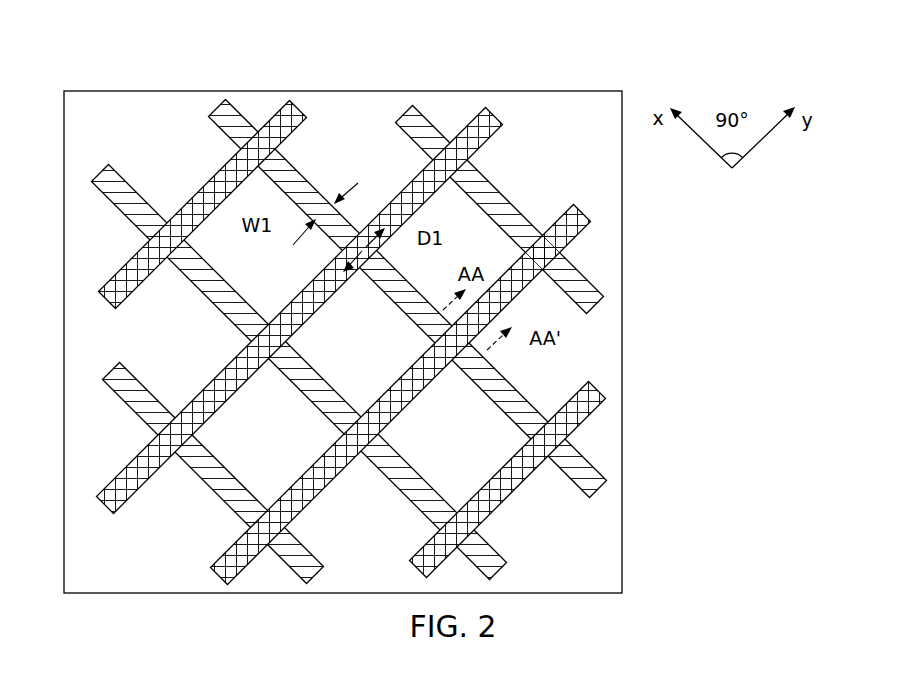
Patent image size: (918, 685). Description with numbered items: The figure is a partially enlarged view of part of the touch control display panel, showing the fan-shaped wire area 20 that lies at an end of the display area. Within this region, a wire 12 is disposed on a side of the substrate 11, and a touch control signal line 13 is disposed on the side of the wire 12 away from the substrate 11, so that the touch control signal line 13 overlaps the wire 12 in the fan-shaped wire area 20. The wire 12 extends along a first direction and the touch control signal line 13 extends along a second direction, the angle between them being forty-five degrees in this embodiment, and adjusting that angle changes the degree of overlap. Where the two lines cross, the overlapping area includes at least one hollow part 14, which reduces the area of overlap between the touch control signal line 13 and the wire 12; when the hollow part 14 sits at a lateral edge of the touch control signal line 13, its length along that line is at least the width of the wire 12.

The substrate 11 is at (596, 553).
The wire 12 is at (602, 473).
The touch control signal line 13 is at (595, 387).
The hollow part 14 is at (565, 247).
The fan-shaped wire area 20 is at (323, 66).